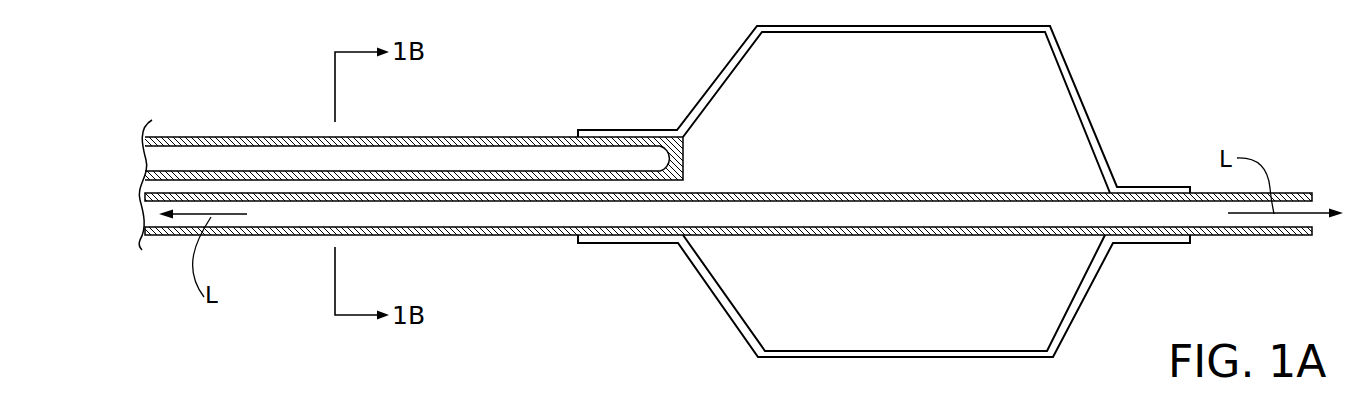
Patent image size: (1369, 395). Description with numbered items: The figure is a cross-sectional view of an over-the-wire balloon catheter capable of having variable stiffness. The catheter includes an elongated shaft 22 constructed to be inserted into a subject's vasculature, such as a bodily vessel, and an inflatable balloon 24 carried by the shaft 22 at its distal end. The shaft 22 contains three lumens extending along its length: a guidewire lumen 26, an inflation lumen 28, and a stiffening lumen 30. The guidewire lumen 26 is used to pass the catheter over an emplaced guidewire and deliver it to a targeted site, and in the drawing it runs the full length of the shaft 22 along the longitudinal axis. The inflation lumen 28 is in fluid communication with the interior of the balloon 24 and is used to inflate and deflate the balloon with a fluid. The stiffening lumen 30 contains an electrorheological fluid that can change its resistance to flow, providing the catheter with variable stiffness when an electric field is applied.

The elongated shaft 22 is at (312, 235).
The inflatable balloon 24 is at (1095, 123).
The guidewire lumen 26 is at (1167, 213).
The inflation lumen 28 is at (673, 187).
The stiffening lumen 30 is at (460, 158).